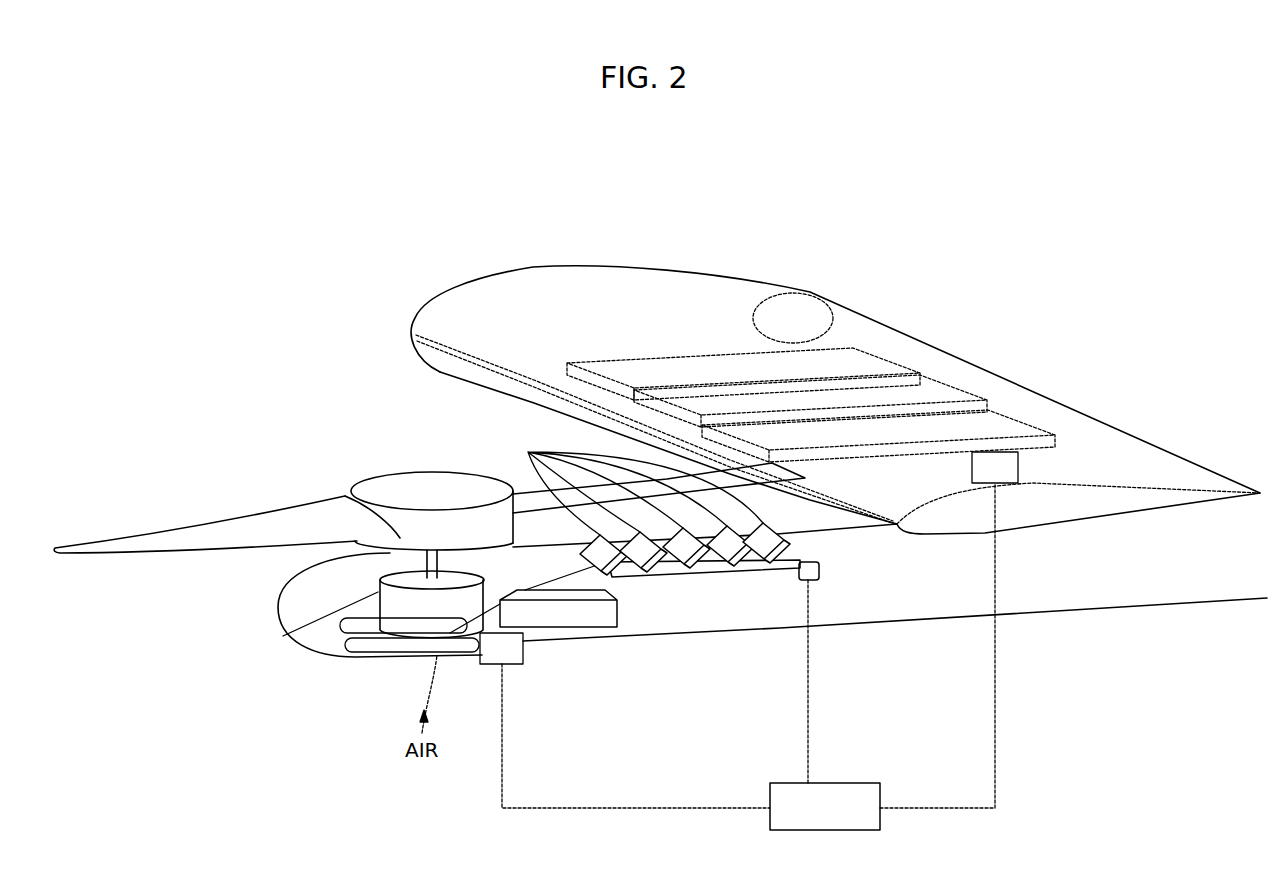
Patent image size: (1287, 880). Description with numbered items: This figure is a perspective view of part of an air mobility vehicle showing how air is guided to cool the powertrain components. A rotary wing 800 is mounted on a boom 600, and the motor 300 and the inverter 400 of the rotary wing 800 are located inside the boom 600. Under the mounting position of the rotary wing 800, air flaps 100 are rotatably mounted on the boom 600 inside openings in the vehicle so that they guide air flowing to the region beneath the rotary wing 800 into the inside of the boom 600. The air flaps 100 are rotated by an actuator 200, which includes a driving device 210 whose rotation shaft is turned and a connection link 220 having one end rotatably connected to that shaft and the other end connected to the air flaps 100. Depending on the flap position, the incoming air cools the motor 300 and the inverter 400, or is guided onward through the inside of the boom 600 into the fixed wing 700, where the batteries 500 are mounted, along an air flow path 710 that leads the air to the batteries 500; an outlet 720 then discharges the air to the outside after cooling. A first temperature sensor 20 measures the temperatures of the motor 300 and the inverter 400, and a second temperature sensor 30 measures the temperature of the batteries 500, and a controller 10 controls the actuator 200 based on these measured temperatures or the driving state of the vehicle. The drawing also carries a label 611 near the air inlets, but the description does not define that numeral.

The controller 10 is at (748, 657).
The first temperature sensor 20 is at (501, 648).
The second temperature sensor 30 is at (995, 467).
The air flaps 100 is at (626, 479).
The actuator 200 is at (665, 584).
The driving device 210 is at (820, 568).
The connection link 220 is at (760, 578).
The motor 300 is at (283, 636).
The inverter 400 is at (567, 619).
The batteries 500 is at (933, 391).
The boom 600 is at (1110, 585).
The air ducts 611 is at (360, 657).
The fixed wing 700 is at (1017, 387).
The air flow path 710 is at (1093, 504).
The outlet 720 is at (790, 313).
The rotary wing 800 is at (393, 491).